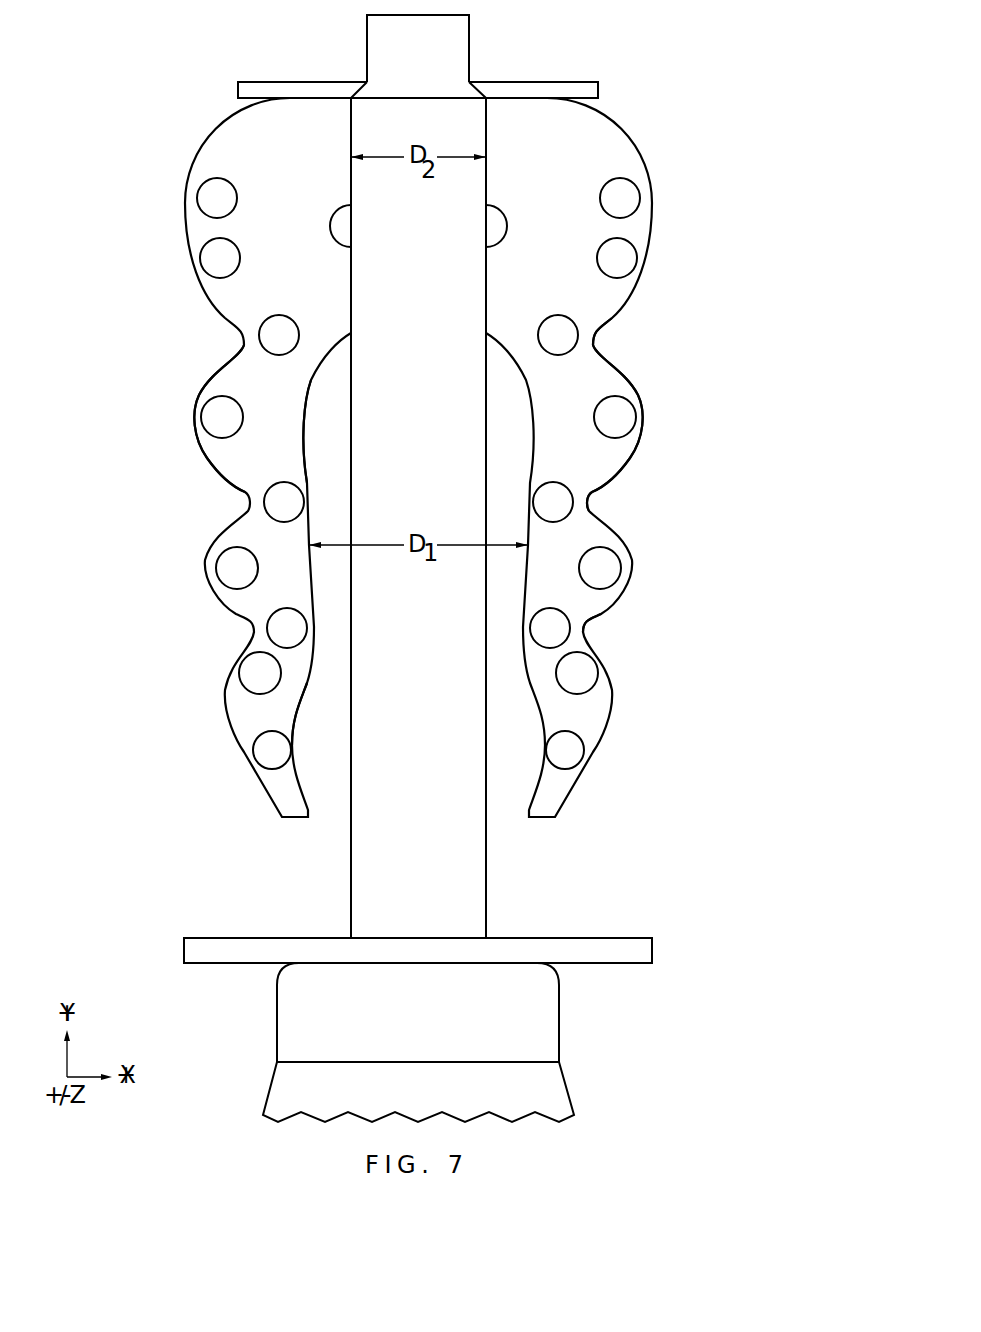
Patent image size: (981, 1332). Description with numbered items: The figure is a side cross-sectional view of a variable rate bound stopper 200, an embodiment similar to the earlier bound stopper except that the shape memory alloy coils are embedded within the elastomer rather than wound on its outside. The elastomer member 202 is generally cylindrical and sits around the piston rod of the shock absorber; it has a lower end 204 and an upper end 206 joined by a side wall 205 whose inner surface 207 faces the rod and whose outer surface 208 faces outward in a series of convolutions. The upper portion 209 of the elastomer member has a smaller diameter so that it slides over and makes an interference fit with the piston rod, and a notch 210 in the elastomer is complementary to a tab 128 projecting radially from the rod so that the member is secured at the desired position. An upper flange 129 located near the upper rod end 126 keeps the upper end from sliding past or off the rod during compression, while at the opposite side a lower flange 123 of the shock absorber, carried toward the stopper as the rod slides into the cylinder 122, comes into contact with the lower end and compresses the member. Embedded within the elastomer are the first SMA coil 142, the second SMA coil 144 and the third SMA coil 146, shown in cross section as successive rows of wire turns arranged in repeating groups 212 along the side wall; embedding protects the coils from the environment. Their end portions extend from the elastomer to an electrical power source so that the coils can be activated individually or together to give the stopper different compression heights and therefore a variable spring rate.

The variable rate bound stopper 200 is at (412, 470).
The elastomer member 202 is at (223, 132).
The lower end 204 is at (542, 818).
The side wall 205 is at (242, 392).
The upper end 206 is at (548, 98).
The inner surface 207 is at (303, 697).
The outer surface 208 is at (640, 443).
The upper portion 209 is at (351, 112).
The notch 210 is at (508, 227).
The SMA coil group 212 is at (647, 302).
The first SMA coil 142 is at (641, 197).
The second SMA coil 144 is at (638, 258).
The third SMA coil 146 is at (578, 336).
The upper rod end 126 is at (470, 35).
The tab 128 is at (486, 230).
The upper flange 129 is at (260, 82).
The lower flange 123 is at (652, 950).
The cylinder 122 is at (569, 1092).